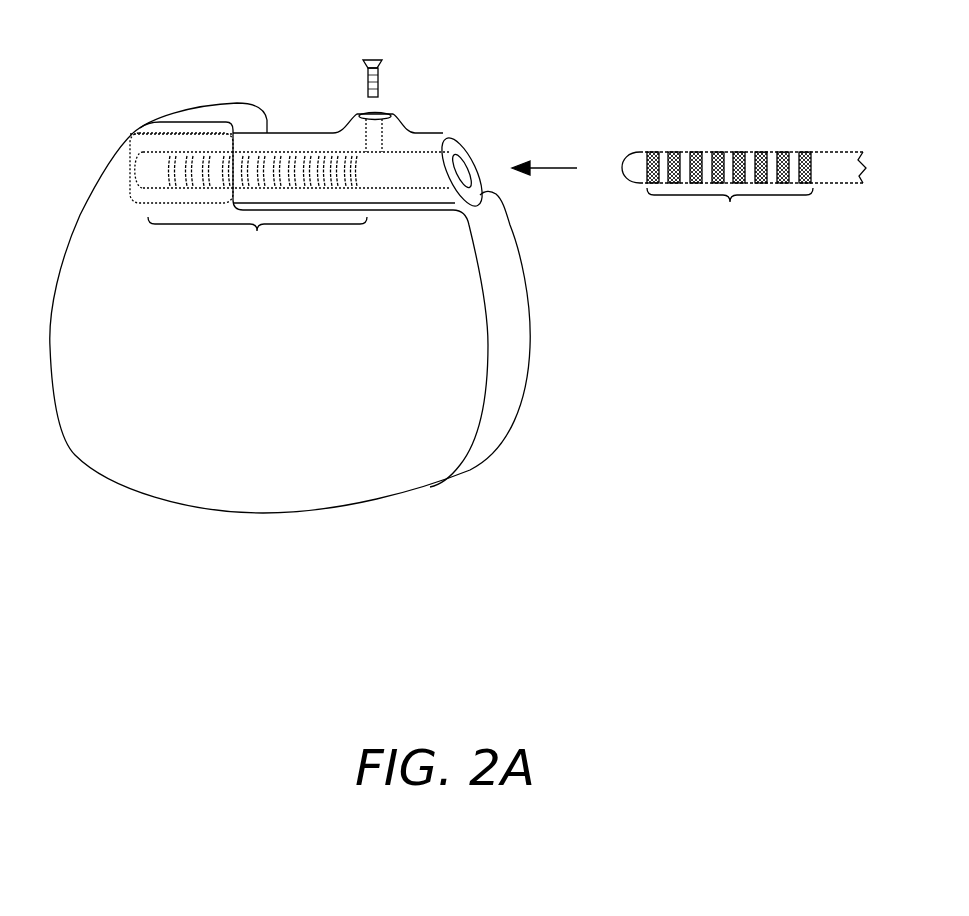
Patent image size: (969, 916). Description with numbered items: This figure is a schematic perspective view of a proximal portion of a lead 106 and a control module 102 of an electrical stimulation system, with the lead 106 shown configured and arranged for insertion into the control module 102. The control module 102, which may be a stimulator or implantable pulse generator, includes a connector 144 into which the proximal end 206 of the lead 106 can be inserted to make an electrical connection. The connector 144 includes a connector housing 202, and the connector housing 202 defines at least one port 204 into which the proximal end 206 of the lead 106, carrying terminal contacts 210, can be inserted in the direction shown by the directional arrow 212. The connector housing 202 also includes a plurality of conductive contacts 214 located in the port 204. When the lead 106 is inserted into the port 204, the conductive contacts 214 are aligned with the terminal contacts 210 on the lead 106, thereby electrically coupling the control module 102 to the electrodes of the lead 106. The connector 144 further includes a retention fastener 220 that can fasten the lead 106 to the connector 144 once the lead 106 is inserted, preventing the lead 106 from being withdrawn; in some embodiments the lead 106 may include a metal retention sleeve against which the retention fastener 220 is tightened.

The control module 102 is at (101, 104).
The connector 144 is at (165, 140).
The connector housing 202 is at (295, 132).
The port 204 is at (482, 143).
The directional arrow 212 is at (553, 166).
The retention fastener 220 is at (381, 73).
The conductive contacts 214 is at (257, 239).
The proximal end 206 is at (702, 126).
The lead 106 is at (754, 152).
The terminal contacts 210 is at (730, 209).